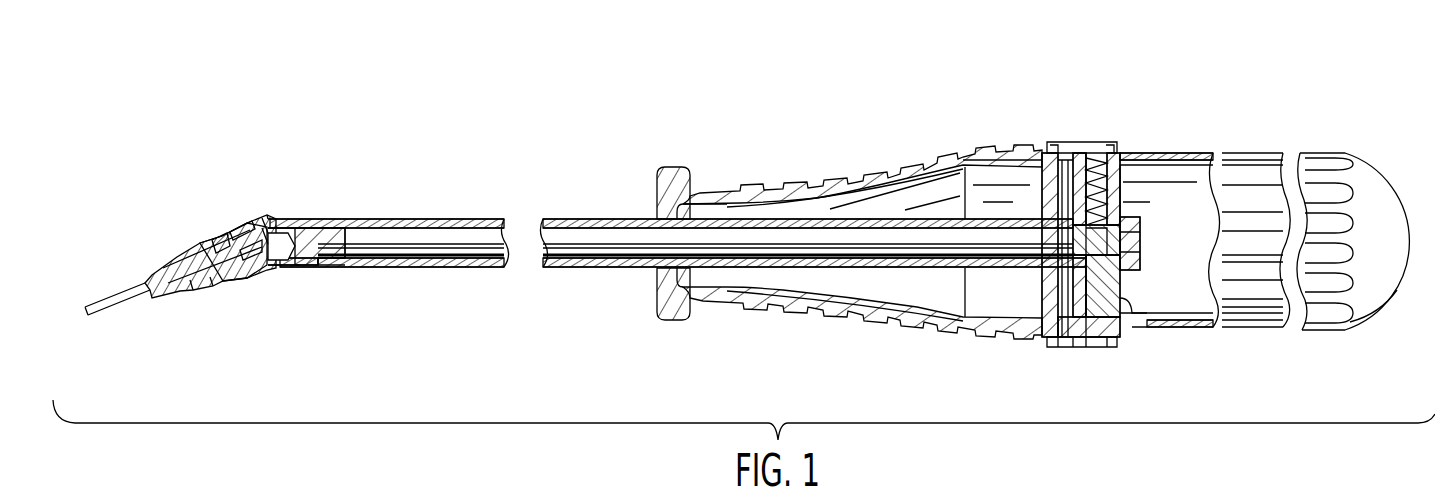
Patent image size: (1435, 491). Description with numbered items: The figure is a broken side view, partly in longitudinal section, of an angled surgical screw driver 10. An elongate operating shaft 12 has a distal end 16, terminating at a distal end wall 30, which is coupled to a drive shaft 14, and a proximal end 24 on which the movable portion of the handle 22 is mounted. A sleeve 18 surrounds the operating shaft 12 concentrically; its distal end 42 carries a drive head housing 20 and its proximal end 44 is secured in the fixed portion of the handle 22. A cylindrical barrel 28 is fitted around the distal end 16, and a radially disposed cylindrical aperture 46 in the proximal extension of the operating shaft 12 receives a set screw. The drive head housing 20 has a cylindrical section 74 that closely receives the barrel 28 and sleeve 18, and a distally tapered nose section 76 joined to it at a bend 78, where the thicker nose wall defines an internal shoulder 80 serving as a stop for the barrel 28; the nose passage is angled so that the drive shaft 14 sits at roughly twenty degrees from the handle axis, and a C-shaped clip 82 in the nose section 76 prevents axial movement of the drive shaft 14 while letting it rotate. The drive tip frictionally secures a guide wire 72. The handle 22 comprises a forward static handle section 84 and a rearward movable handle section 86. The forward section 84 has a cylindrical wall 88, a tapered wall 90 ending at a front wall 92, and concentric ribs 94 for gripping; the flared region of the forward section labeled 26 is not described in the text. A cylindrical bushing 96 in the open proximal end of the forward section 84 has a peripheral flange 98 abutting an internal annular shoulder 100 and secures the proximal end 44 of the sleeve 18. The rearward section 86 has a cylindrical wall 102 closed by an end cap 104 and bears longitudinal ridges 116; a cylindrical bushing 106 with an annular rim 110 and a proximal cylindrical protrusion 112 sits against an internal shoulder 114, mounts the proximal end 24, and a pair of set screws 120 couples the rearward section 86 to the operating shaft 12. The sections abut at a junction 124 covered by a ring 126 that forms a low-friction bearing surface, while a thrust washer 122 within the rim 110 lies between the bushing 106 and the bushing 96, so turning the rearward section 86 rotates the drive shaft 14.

The angled surgical screw driver 10 is at (503, 172).
The operating shaft 12 is at (564, 266).
The drive shaft 14 is at (193, 288).
The distal end 16 is at (266, 228).
The sleeve 18 is at (617, 267).
The drive head housing 20 is at (318, 276).
The handle 22 is at (1396, 185).
The proximal end 24 is at (1097, 258).
The flange 26 is at (730, 272).
The cylindrical barrel 28 is at (286, 278).
The distal end wall 30 is at (244, 268).
The distal end 42 is at (322, 227).
The proximal end 44 is at (1042, 257).
The cylindrical aperture 46 is at (1132, 235).
The guide wire 72 is at (118, 294).
The cylindrical section 74 is at (272, 224).
The nose section 76 is at (232, 238).
The bend 78 is at (250, 233).
The internal shoulder 80 is at (262, 216).
The C-shaped clip 82 is at (213, 241).
The forward static handle section 84 is at (772, 185).
The rearward movable handle section 86 is at (1264, 150).
The cylindrical wall 88 is at (995, 150).
The tapered wall 90 is at (832, 185).
The front wall 92 is at (672, 206).
The concentric ribs 94 is at (830, 310).
The cylindrical bushing 96 is at (1042, 205).
The annular peripheral flange 98 is at (1050, 153).
The internal annular shoulder 100 is at (1076, 153).
The cylindrical wall 102 is at (1196, 330).
The end cap 104 is at (1387, 302).
The cylindrical bushing 106 is at (1138, 326).
The annular rim 110 is at (1057, 150).
The cylindrical protrusion 112 is at (1143, 235).
The internal shoulder 114 is at (1105, 155).
The longitudinal ridges 116 is at (1270, 297).
The set screws 120 is at (1127, 205).
The thrust washer 122 is at (1055, 337).
The junction 124 is at (1066, 347).
The ring 126 is at (1073, 347).